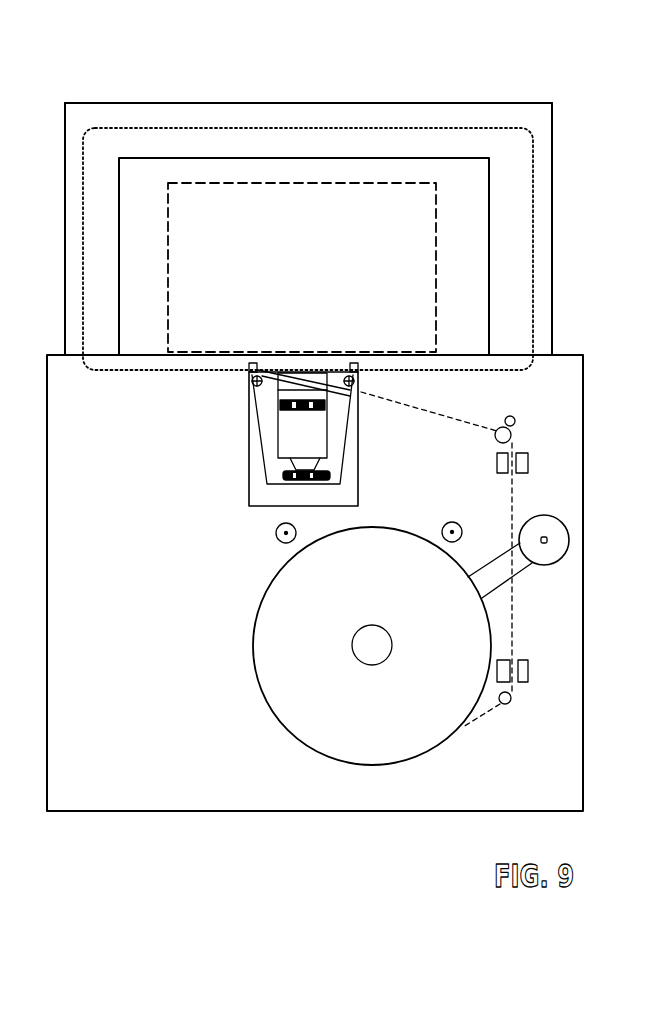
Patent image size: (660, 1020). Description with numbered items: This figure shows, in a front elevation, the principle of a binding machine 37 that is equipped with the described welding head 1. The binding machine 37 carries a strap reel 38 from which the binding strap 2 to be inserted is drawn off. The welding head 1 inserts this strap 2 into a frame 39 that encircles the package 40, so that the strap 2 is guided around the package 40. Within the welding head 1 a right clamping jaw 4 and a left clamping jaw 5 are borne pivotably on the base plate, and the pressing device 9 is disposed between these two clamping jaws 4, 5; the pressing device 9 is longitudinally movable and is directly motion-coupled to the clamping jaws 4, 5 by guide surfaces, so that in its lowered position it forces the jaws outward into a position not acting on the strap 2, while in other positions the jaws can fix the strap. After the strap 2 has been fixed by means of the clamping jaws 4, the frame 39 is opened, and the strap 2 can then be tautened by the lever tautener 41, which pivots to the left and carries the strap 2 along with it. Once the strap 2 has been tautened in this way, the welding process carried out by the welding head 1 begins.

The welding head 1 is at (232, 466).
The binding strap 2 is at (366, 130).
The right clamping jaw 4 is at (345, 422).
The left clamping jaw 5 is at (262, 395).
The pressing device 9 is at (315, 448).
The binding machine 37 is at (578, 90).
The strap reel 38 is at (355, 760).
The frame 39 is at (298, 108).
The package 40 is at (413, 266).
The lever tautener 41 is at (560, 537).